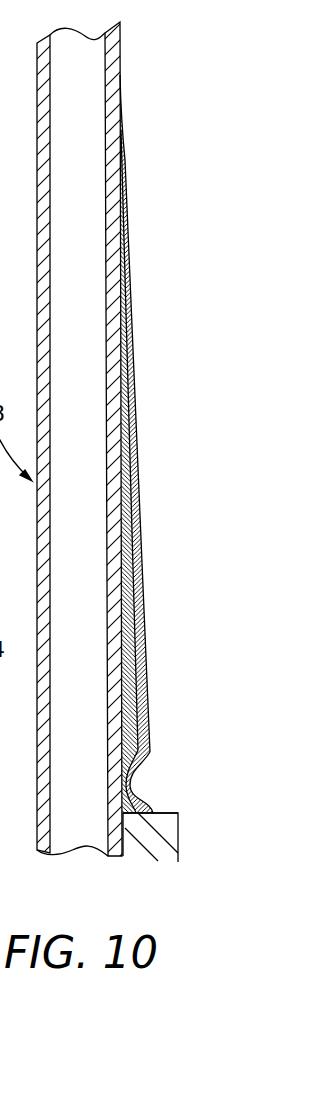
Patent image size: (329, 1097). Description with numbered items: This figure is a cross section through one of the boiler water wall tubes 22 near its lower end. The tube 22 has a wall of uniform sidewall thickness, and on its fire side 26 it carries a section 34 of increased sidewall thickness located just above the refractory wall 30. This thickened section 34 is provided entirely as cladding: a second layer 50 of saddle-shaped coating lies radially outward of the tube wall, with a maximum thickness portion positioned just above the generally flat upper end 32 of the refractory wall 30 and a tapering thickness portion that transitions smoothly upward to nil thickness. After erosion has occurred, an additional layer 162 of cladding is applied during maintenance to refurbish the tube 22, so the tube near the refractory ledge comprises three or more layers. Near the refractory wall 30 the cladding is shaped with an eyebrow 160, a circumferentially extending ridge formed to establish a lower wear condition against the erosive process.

The metal tube 22 is at (121, 72).
The fire side 26 is at (157, 444).
The second layer 50 is at (131, 548).
The section of increased sidewall thickness 34 is at (144, 626).
The additional layer of cladding 162 is at (144, 690).
The eyebrow 160 is at (149, 757).
The upper end of refractory wall 32 is at (163, 813).
The refractory wall 30 is at (157, 832).